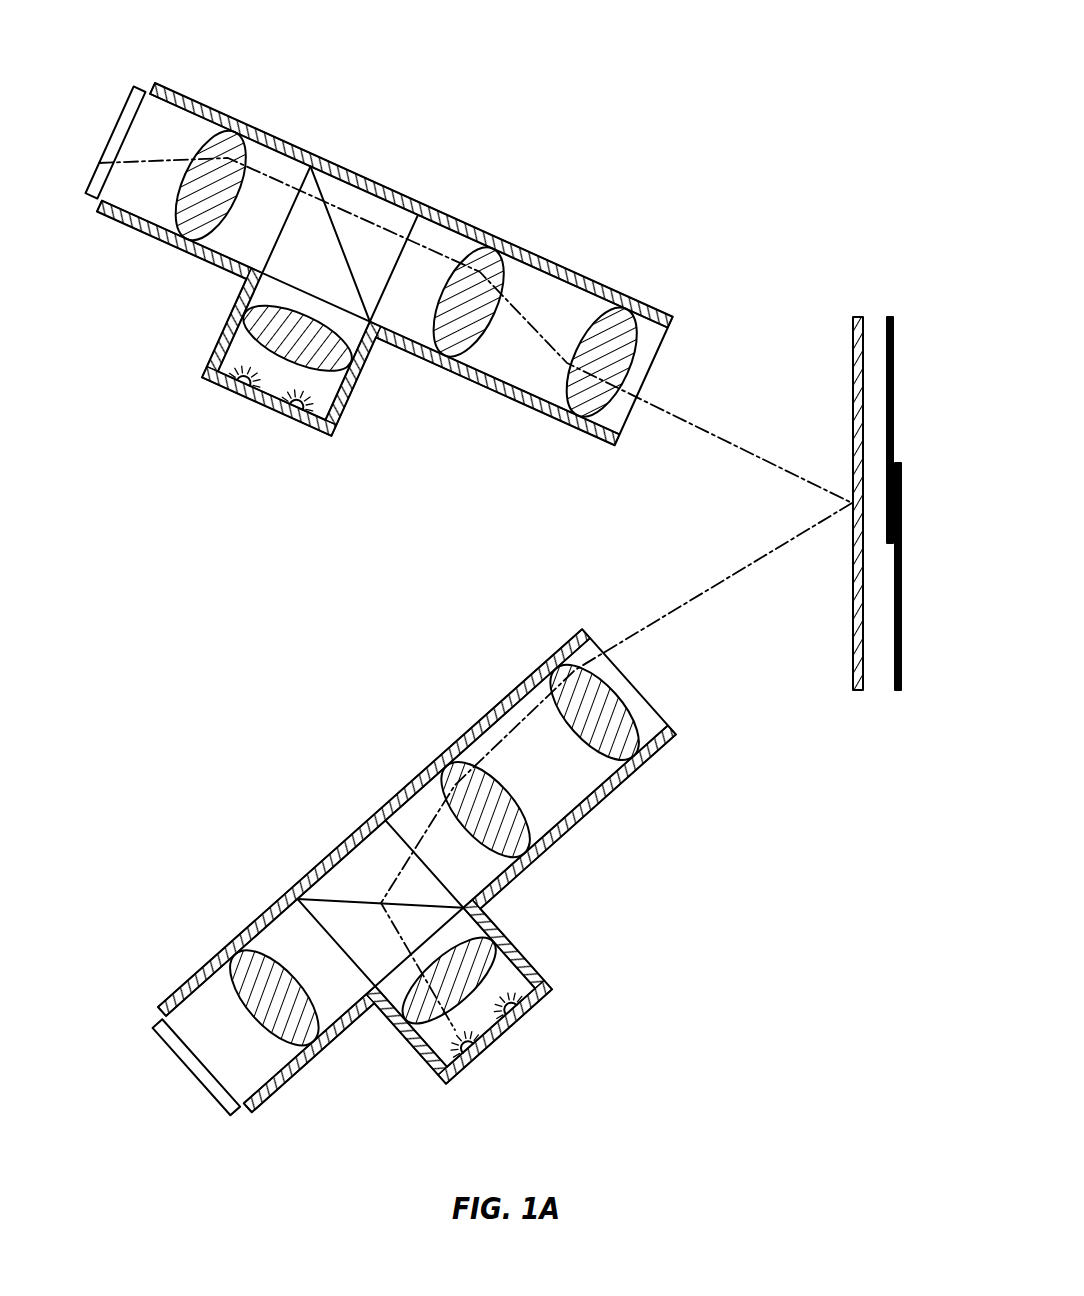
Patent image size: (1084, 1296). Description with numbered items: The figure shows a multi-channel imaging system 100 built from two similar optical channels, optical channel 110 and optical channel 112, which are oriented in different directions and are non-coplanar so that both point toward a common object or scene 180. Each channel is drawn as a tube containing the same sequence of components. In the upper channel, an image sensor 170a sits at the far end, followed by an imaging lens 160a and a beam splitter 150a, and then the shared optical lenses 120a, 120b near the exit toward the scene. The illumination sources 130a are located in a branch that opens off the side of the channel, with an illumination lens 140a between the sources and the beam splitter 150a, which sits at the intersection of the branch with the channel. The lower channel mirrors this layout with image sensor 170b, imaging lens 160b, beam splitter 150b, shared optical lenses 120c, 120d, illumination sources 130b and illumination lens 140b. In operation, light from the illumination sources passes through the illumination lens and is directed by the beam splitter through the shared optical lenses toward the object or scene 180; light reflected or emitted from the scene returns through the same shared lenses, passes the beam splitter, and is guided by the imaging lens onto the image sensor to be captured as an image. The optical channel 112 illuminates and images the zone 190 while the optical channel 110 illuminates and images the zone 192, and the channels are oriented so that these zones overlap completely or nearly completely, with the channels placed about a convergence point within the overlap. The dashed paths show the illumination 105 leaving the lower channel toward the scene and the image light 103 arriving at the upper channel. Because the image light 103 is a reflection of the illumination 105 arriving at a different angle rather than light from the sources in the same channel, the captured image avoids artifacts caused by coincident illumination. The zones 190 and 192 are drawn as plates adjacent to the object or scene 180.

The multi-channel imaging system 100 is at (888, 38).
The image light 103 is at (709, 428).
The illumination 105 is at (707, 603).
The optical channel 110 is at (616, 141).
The optical channel 112 is at (619, 1110).
The shared optical lens 120a is at (503, 268).
The shared optical lens 120b is at (633, 318).
The shared optical lens 120c is at (440, 776).
The shared optical lens 120d is at (540, 690).
The illumination source 130a is at (297, 405).
The illumination source 130b is at (480, 1047).
The illumination lens 140a is at (341, 416).
The illumination lens 140b is at (497, 963).
The beam splitter 150a is at (322, 188).
The beam splitter 150b is at (290, 899).
The imaging lens 160a is at (246, 142).
The imaging lens 160b is at (223, 965).
The image sensor 170a is at (108, 138).
The image sensor 170b is at (203, 1090).
The object or scene 180 is at (852, 385).
The zone 190 is at (893, 385).
The zone 192 is at (901, 630).